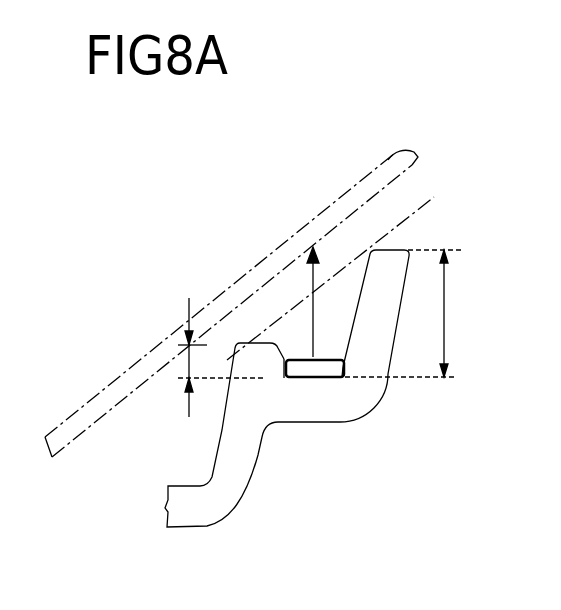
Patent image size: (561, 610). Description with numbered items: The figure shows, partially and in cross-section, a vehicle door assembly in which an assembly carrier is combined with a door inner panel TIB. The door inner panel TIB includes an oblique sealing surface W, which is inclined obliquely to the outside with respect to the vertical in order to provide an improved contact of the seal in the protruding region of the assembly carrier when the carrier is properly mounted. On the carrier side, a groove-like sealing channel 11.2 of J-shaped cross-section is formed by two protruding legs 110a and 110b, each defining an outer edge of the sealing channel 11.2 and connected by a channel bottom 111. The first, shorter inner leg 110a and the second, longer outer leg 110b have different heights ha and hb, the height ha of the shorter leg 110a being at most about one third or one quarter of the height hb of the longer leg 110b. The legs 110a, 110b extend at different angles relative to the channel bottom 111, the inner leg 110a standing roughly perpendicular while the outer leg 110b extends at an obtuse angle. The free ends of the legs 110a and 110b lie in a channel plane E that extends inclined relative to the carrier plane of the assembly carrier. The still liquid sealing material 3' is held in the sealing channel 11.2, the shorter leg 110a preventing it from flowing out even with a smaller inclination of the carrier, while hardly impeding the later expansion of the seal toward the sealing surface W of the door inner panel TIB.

The leg 110a is at (263, 363).
The leg 110b is at (394, 267).
The channel bottom 111 is at (318, 374).
The sealing channel 11.2 is at (332, 402).
The sealing material 3' is at (364, 412).
The door inner panel TIB is at (383, 161).
The channel plane E is at (337, 268).
The sealing surface W is at (265, 280).
The height of the shorter leg ha is at (210, 357).
The height of the longer leg hb is at (408, 313).